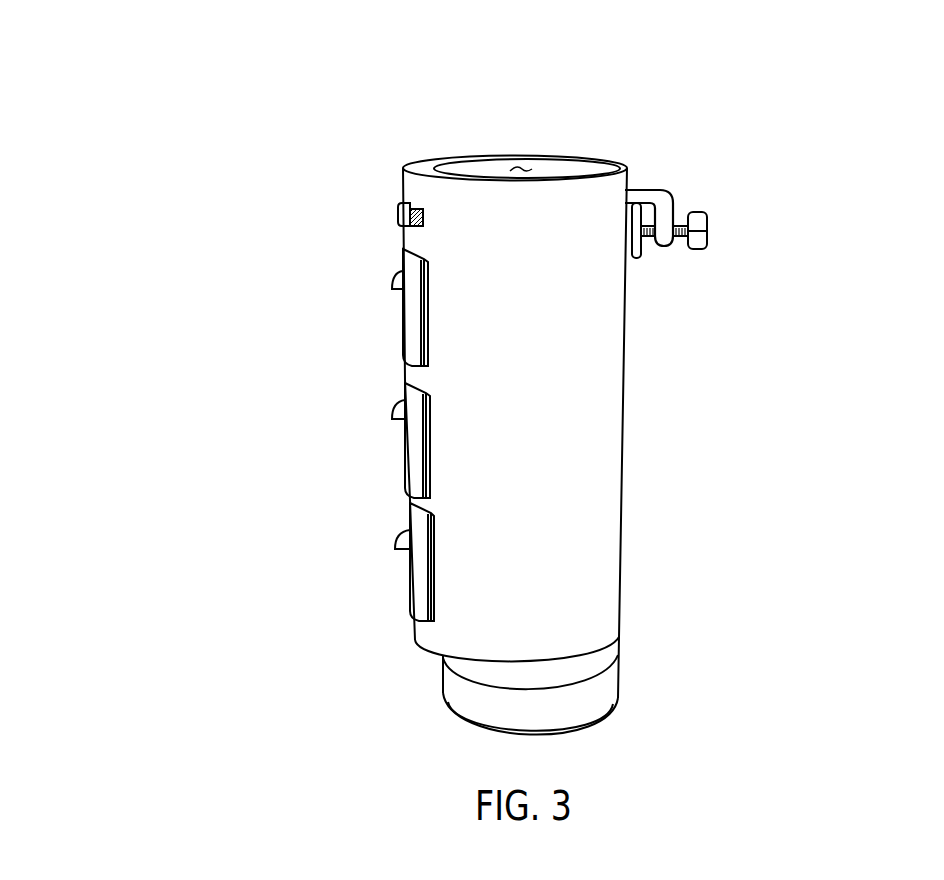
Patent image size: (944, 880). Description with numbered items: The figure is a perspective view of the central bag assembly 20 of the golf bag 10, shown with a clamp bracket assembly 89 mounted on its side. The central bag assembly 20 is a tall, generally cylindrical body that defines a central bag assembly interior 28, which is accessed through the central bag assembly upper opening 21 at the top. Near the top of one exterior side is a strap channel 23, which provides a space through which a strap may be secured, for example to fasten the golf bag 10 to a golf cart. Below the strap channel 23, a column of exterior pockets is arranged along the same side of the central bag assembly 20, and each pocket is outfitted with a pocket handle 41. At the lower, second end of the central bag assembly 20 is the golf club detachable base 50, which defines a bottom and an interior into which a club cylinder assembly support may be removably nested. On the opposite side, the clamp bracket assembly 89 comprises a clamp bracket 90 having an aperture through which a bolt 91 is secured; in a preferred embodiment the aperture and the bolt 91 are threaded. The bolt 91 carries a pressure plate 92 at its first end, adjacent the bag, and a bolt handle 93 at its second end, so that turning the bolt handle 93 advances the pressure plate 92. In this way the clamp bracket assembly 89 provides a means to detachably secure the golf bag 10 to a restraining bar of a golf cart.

The golf bag 10 is at (148, 187).
The central bag assembly 20 is at (645, 519).
The central bag assembly upper opening 21 is at (522, 165).
The strap channel 23 is at (400, 208).
The central bag assembly interior 28 is at (545, 158).
The pocket handle 41 is at (390, 286).
The golf club detachable base 50 is at (592, 690).
The clamp bracket assembly 89 is at (688, 182).
The clamp bracket 90 is at (644, 190).
The bolt 91 is at (674, 218).
The pressure plate 92 is at (639, 248).
The bolt handle 93 is at (699, 230).